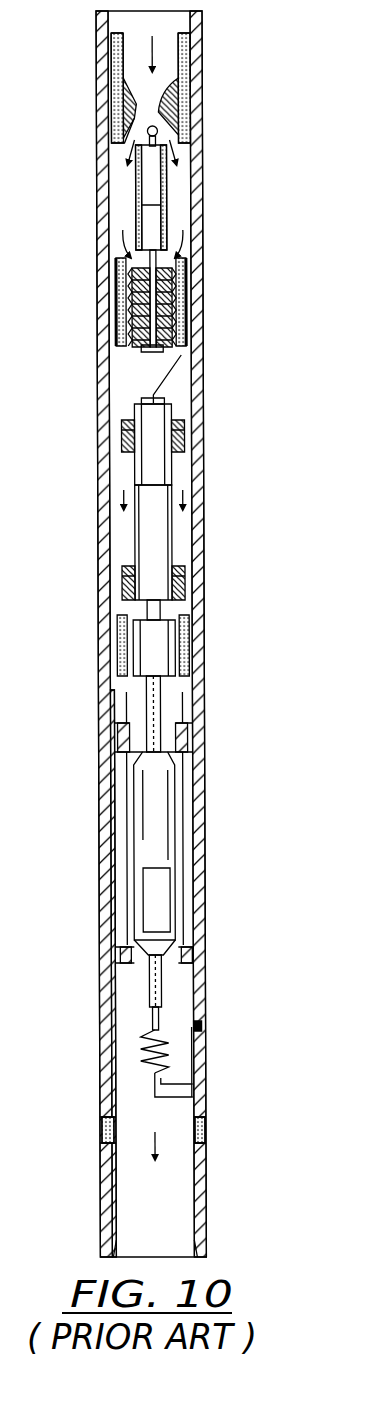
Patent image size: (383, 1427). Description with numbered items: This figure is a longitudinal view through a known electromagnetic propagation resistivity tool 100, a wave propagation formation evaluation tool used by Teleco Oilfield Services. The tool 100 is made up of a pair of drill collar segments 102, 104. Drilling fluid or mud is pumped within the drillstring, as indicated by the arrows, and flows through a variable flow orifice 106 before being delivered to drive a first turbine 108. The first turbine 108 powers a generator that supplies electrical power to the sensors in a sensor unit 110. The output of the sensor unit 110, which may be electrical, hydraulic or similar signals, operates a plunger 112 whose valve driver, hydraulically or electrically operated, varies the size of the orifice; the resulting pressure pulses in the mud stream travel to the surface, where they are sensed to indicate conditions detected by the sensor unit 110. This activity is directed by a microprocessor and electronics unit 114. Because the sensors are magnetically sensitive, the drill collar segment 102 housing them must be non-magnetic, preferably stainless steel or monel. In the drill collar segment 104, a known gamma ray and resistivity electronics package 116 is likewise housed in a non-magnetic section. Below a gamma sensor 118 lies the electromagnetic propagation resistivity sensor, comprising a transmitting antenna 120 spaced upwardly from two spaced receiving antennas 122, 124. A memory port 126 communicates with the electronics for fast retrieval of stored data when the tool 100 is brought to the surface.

The electromagnetic propagation resistivity tool 100 is at (272, 604).
The drill collar segment 102 is at (203, 184).
The drill collar segment 104 is at (205, 760).
The variable flow orifice 106 is at (203, 82).
The first turbine 108 is at (176, 318).
The sensor unit 110 is at (168, 543).
The plunger 112 is at (158, 132).
The microprocessor and electronics unit 114 is at (170, 478).
The gamma ray and resistivity electronics package 116 is at (171, 850).
The gamma sensor 118 is at (159, 893).
The transmitting antenna 120 is at (203, 960).
The receiving antenna 122 is at (203, 1131).
The receiving antenna 124 is at (203, 1163).
The memory port 126 is at (202, 1029).